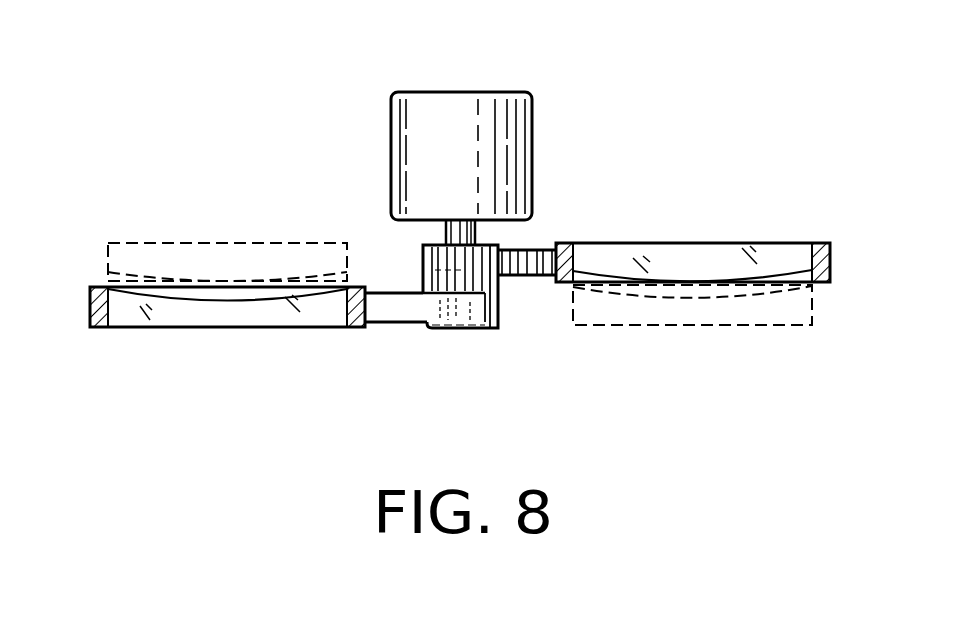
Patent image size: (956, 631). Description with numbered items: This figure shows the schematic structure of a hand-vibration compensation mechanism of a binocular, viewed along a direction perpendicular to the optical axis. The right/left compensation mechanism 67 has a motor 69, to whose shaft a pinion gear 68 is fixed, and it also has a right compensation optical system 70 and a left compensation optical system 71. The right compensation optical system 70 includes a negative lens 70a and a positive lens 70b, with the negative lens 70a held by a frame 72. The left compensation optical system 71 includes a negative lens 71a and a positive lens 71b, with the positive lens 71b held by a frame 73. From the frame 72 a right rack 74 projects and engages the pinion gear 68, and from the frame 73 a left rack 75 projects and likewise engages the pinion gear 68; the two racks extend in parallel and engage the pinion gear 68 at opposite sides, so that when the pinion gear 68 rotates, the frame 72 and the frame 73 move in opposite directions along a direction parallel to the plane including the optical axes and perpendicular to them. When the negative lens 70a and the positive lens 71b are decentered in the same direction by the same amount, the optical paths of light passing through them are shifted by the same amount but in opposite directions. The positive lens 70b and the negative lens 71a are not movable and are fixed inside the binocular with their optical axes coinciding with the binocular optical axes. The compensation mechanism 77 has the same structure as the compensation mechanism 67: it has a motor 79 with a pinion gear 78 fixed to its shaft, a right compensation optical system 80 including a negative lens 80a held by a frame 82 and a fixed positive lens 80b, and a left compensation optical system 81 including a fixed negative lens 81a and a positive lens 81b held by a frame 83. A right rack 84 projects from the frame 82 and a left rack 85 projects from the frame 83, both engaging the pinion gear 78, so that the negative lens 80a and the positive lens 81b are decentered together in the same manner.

The right/left compensation mechanism 67 is at (385, 247).
The compensation mechanism 77 is at (400, 179).
The pinion gear 68 is at (505, 316).
The pinion gear 78 is at (488, 335).
The motor 69 is at (465, 112).
The motor 79 is at (461, 124).
The right compensation optical system 70 is at (87, 131).
The right compensation optical system 80 is at (226, 239).
The negative lens 70a is at (183, 312).
The negative lens 80a is at (219, 233).
The positive lens 70b is at (252, 268).
The positive lens 80b is at (227, 213).
The left compensation optical system 71 is at (658, 133).
The left compensation optical system 81 is at (697, 189).
The negative lens 71a is at (678, 282).
The negative lens 81a is at (692, 236).
The positive lens 71b is at (770, 263).
The positive lens 81b is at (705, 214).
The frame 72 is at (353, 327).
The frame 82 is at (227, 356).
The frame 73 is at (562, 243).
The frame 83 is at (693, 200).
The right rack 74 is at (397, 312).
The right rack 84 is at (417, 364).
The left rack 75 is at (533, 280).
The left rack 85 is at (570, 334).